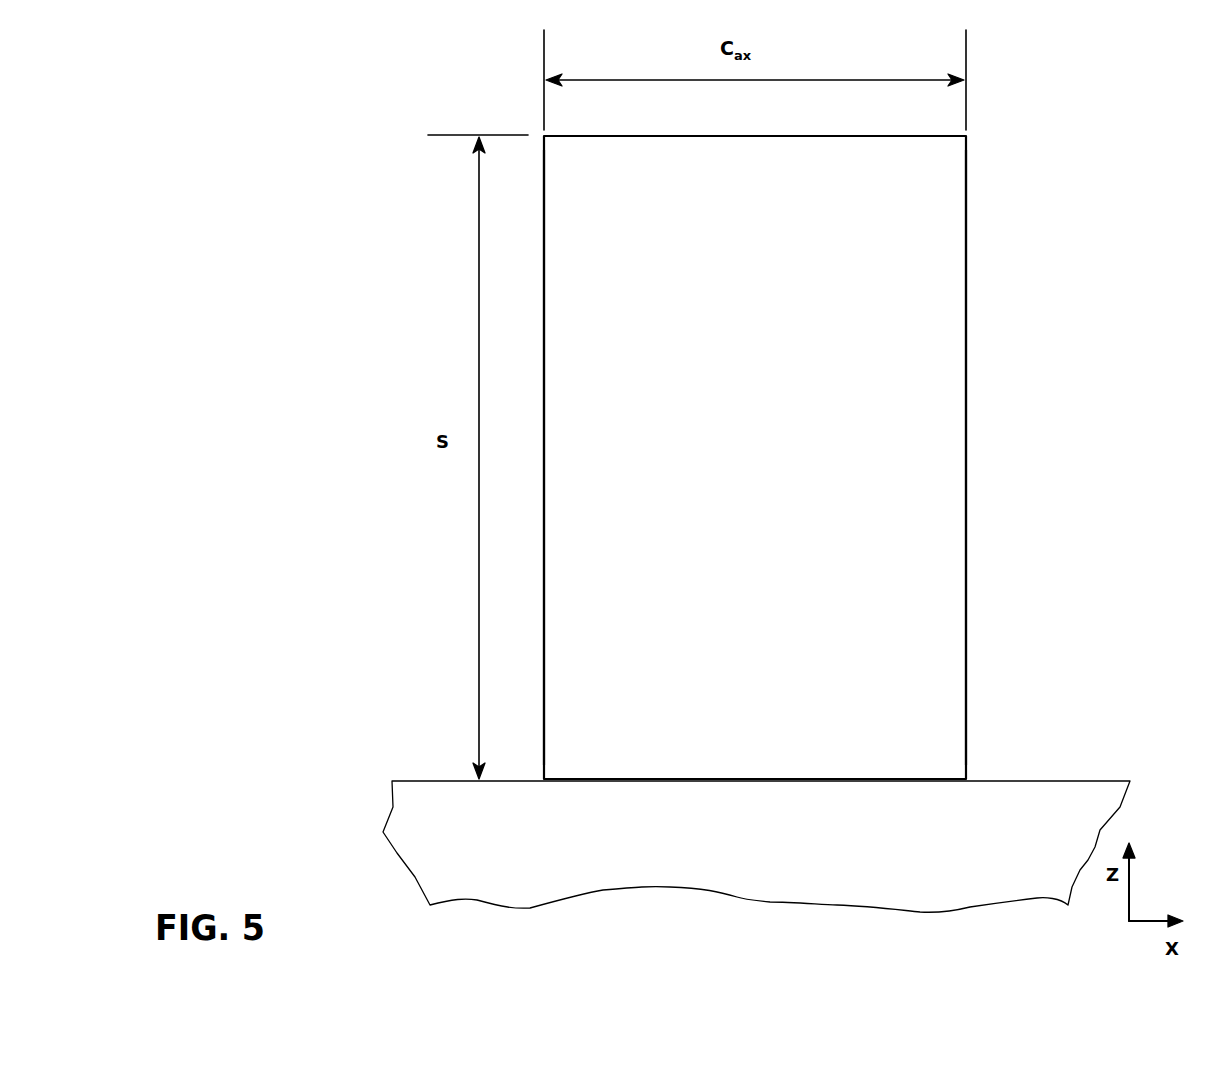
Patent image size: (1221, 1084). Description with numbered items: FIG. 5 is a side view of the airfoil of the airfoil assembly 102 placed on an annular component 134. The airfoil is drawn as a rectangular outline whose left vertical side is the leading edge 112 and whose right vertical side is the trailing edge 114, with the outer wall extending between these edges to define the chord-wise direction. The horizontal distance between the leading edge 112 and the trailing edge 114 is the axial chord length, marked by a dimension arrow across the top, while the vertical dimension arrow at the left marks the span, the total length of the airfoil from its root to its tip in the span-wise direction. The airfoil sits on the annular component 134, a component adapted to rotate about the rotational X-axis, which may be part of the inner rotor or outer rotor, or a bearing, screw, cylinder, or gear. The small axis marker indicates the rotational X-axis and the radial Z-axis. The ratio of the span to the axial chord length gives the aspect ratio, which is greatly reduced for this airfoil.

The airfoil assembly 102 is at (1002, 397).
The leading edge 112 is at (544, 397).
The trailing edge 114 is at (966, 488).
The annular component 134 is at (749, 826).